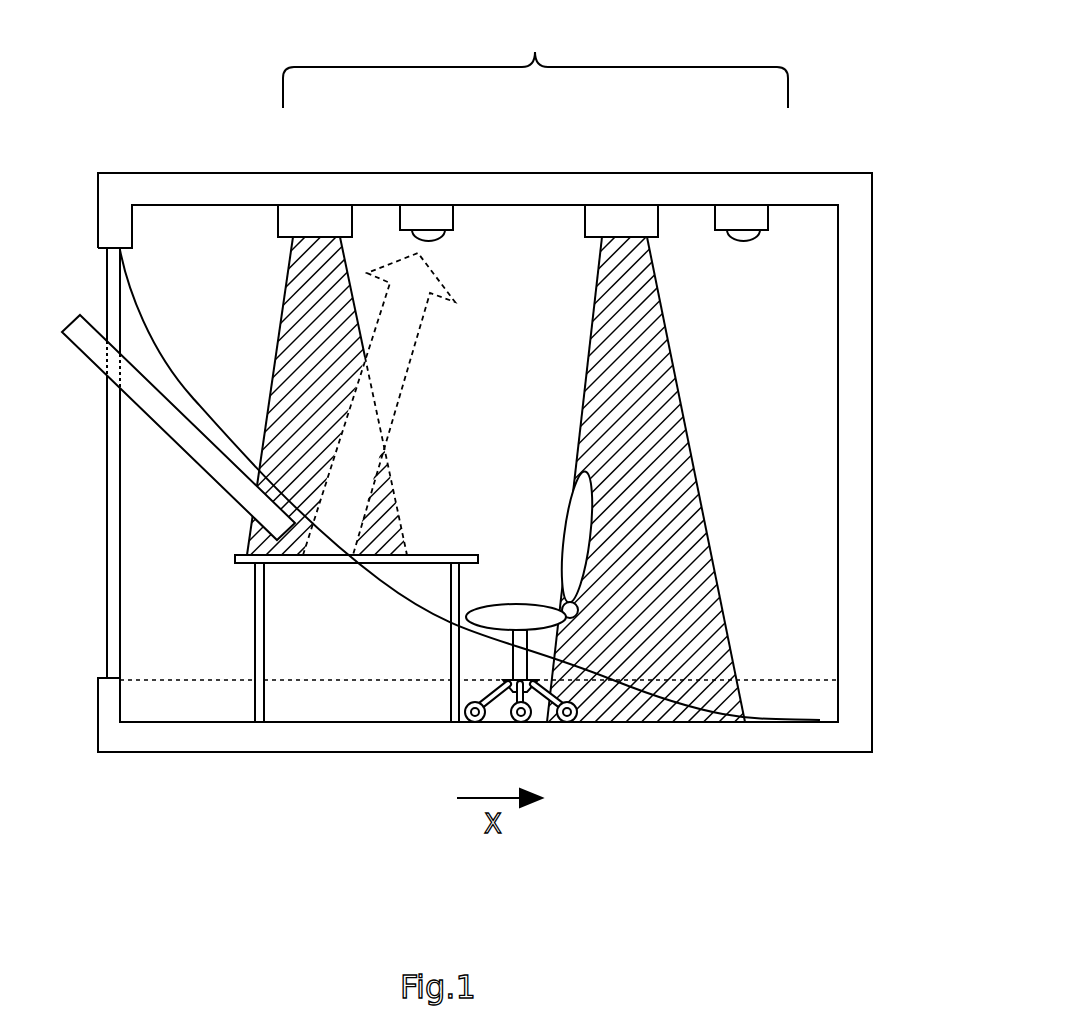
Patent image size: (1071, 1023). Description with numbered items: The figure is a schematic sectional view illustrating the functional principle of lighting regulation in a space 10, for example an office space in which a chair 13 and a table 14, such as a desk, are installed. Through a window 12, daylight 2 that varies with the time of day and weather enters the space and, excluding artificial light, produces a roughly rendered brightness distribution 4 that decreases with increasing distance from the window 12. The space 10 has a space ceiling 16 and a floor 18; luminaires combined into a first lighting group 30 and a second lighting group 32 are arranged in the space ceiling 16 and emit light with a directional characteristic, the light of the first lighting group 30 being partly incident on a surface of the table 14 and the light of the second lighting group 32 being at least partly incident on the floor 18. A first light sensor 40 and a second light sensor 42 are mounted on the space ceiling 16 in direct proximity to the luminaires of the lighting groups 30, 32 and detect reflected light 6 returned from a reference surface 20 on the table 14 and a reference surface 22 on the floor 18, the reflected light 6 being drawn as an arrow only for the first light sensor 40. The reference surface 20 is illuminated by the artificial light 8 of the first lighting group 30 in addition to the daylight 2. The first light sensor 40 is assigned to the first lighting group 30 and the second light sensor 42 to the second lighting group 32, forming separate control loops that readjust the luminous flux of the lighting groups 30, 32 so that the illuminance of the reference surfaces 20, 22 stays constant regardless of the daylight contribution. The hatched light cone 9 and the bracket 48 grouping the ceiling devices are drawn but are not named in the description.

The daylight 2 is at (177, 432).
The brightness distribution 4 is at (150, 337).
The reflected light 6 is at (397, 363).
The artificial light 8 is at (287, 292).
The light cone of second luminaire 9 is at (683, 421).
The space 10 is at (840, 488).
The window 12 is at (113, 293).
The chair 13 is at (514, 590).
The table 14 is at (448, 528).
The space ceiling 16 is at (526, 208).
The floor 18 is at (393, 718).
The reference surface 20 is at (398, 523).
The reference surface 22 is at (650, 720).
The first lighting group 30 is at (318, 220).
The second lighting group 32 is at (612, 220).
The first light sensor 40 is at (440, 218).
The second light sensor 42 is at (731, 220).
The lighting system 48 is at (535, 63).